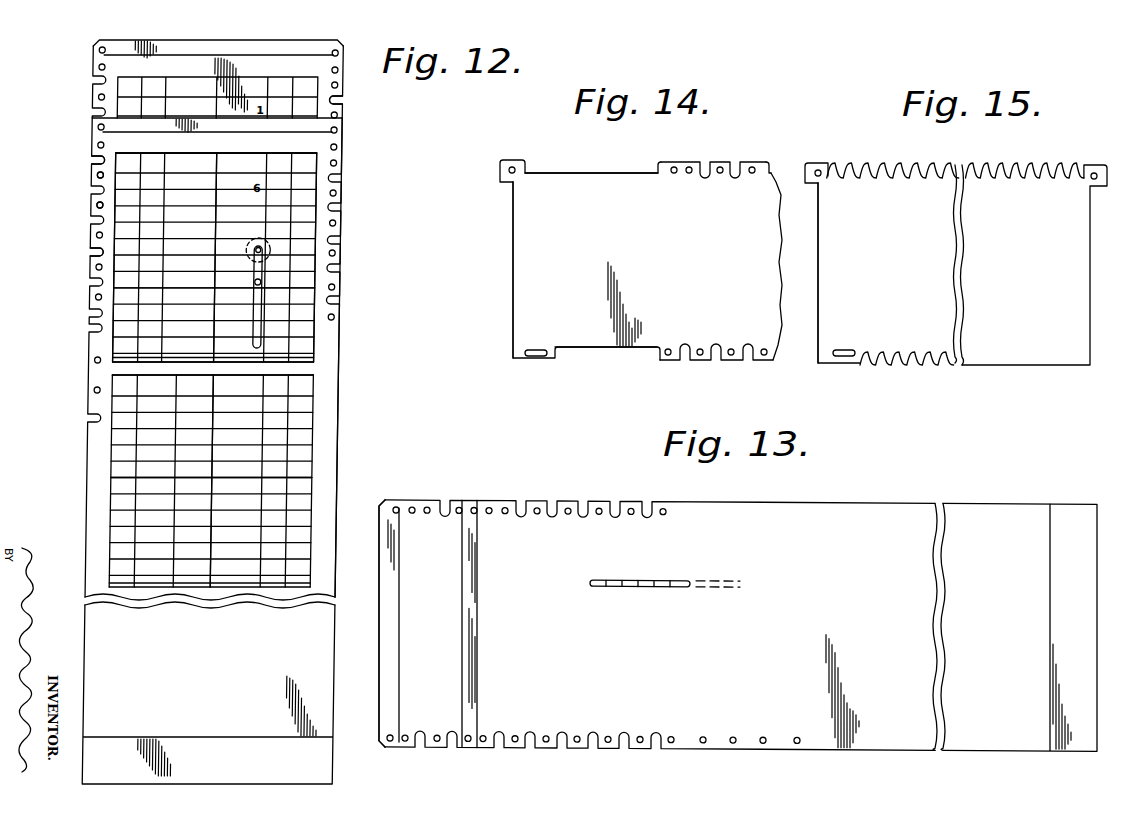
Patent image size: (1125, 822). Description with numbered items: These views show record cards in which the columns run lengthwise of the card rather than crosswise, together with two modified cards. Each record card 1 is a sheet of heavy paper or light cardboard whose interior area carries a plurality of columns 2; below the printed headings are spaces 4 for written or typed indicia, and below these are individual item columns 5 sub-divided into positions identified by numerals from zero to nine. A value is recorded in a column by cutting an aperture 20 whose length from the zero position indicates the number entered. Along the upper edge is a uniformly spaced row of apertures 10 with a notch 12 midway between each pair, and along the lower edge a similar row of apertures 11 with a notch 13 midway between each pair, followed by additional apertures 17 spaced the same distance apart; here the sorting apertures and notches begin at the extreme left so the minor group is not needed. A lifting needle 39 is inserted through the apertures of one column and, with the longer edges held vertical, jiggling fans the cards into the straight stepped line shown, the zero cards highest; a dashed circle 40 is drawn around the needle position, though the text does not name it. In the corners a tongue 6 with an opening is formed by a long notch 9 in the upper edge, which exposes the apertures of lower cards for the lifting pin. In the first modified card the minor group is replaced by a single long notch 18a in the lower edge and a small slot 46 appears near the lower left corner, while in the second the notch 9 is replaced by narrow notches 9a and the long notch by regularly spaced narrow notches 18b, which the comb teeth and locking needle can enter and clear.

In FIG. 12, the record card 1 is at (332, 398).
In FIG. 14, the record card 1 is at (527, 260).
In FIG. 15, the record card 1 is at (843, 290).
In FIG. 13, the record card 1 is at (487, 660).
In FIG. 12, the columns 2 is at (305, 163).
In FIG. 12, the spaces 4 is at (306, 184).
In FIG. 12, the item columns 5 is at (311, 298).
In FIG. 12, the tongue 6 is at (215, 257).
In FIG. 14, the notch 9 is at (603, 173).
In FIG. 15, the narrow notches 9a is at (906, 168).
In FIG. 12, the apertures 10 is at (339, 86).
In FIG. 14, the apertures 10 is at (754, 166).
In FIG. 13, the apertures 10 is at (570, 502).
In FIG. 12, the apertures 11 is at (94, 197).
In FIG. 14, the apertures 11 is at (731, 356).
In FIG. 13, the apertures 11 is at (438, 742).
In FIG. 12, the notch 12 is at (338, 100).
In FIG. 14, the notch 12 is at (735, 167).
In FIG. 13, the notch 12 is at (616, 504).
In FIG. 12, the notch 13 is at (94, 160).
In FIG. 14, the notch 13 is at (686, 362).
In FIG. 13, the notch 13 is at (530, 747).
In FIG. 12, the additional apertures 17 is at (94, 420).
In FIG. 13, the additional apertures 17 is at (763, 742).
In FIG. 14, the long notch 18a is at (598, 348).
In FIG. 15, the narrow notches 18b is at (928, 362).
In FIG. 12, the aperture 20 is at (264, 282).
In FIG. 13, the aperture 20 is at (623, 580).
In FIG. 12, the lifting needle 39 is at (272, 251).
In FIG. 12, the dashed region 40 is at (274, 240).
In FIG. 14, the slot 46 is at (533, 356).